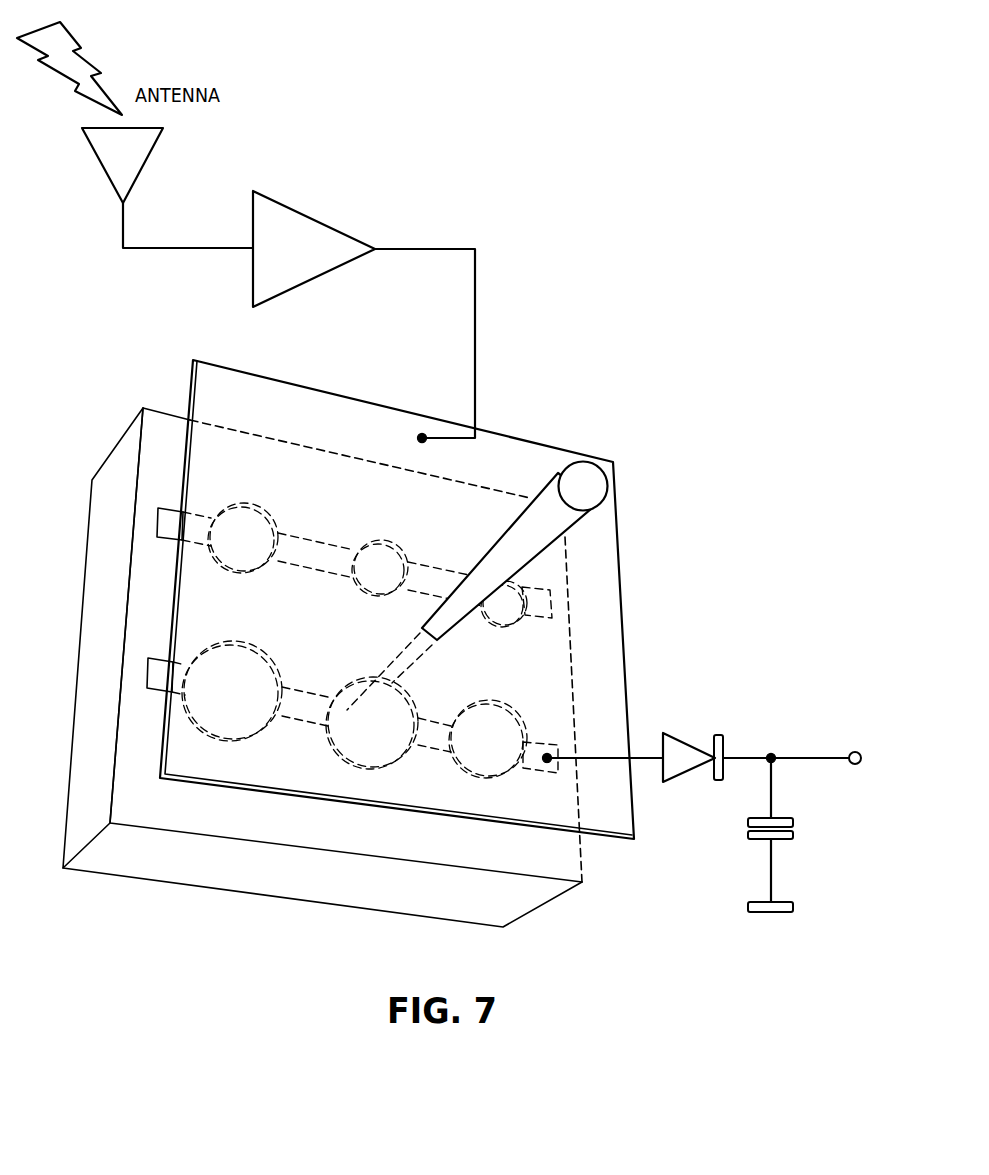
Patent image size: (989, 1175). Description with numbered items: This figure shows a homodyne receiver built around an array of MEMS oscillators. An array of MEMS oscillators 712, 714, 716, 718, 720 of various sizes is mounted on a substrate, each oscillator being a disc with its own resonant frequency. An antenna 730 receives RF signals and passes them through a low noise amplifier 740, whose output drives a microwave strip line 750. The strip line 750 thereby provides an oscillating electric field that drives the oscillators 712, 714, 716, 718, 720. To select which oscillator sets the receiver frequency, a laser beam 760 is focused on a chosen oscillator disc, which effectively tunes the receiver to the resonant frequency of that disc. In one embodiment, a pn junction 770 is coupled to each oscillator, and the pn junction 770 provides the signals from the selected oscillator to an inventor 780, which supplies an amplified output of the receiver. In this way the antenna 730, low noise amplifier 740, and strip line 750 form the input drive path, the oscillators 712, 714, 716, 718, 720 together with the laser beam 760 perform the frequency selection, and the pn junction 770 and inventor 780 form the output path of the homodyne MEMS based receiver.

The MEMS oscillator 712 is at (392, 702).
The MEMS oscillator 714 is at (244, 661).
The MEMS oscillator 716 is at (512, 607).
The MEMS oscillator 718 is at (388, 552).
The MEMS oscillator 720 is at (250, 525).
The antenna 730 is at (102, 167).
The low noise amplifier 740 is at (315, 220).
The microwave strip line 750 is at (626, 647).
The laser beam 760 is at (590, 485).
The pn junction 770 is at (495, 723).
The inventor 780 is at (692, 742).